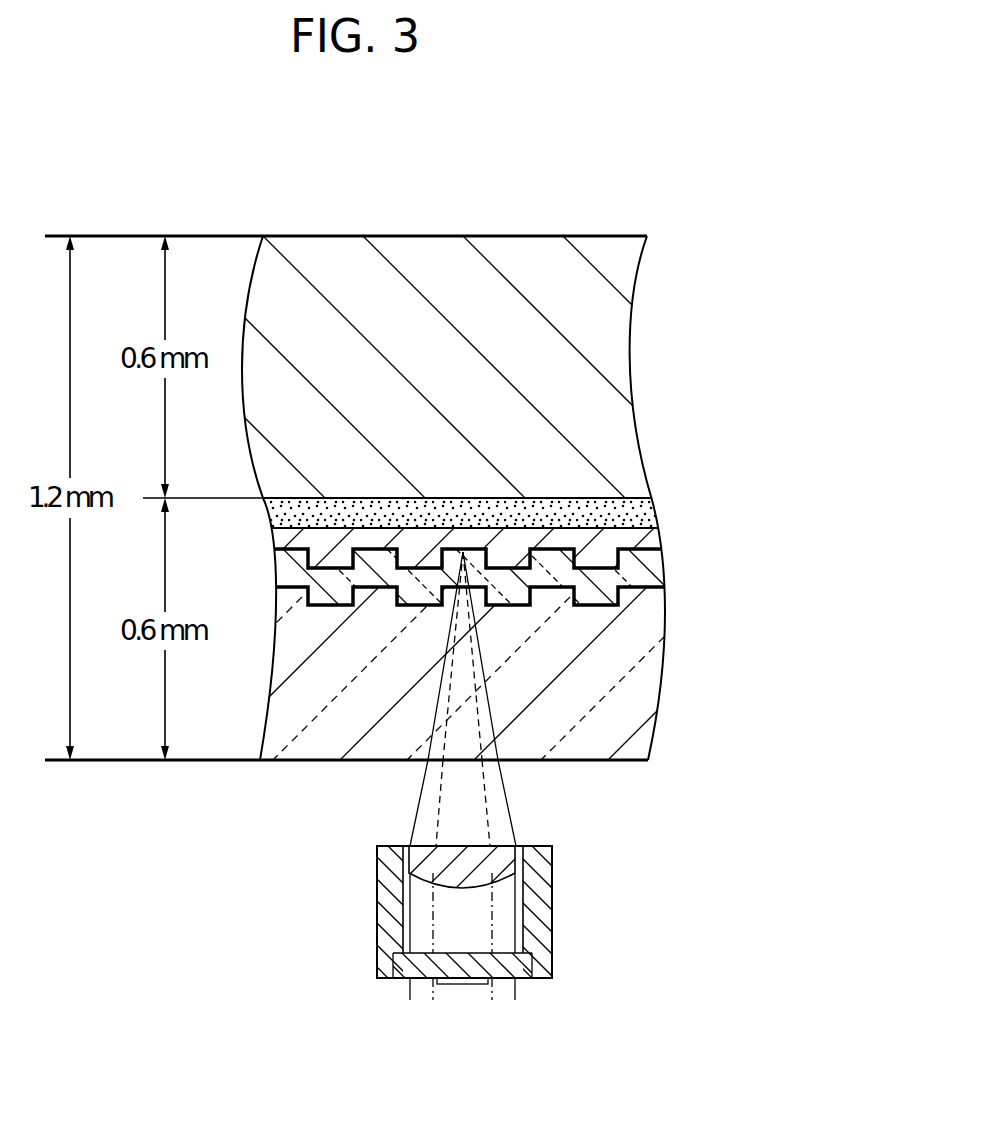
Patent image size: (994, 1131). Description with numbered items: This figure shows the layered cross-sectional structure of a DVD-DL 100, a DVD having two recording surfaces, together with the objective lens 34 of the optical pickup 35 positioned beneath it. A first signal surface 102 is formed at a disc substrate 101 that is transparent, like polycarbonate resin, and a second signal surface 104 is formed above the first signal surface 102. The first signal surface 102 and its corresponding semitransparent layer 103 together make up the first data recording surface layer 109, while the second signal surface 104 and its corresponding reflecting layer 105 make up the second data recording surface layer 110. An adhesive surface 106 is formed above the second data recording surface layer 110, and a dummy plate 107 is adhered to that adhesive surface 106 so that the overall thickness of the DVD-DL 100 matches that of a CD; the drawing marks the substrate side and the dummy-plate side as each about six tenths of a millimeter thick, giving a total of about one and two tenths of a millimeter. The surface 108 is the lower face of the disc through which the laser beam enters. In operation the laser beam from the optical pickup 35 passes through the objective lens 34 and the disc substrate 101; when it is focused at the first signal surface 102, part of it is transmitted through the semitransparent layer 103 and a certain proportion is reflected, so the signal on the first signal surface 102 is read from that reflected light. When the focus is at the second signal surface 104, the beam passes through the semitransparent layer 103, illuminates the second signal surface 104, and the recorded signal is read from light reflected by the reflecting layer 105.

The DVD-DL 100 is at (582, 226).
The disc substrate 101 is at (627, 697).
The first signal surface 102 is at (596, 605).
The semitransparent layer 103 is at (600, 590).
The second signal surface 104 is at (535, 552).
The reflecting layer 105 is at (507, 545).
The adhesive surface 106 is at (423, 507).
The dummy plate 107 is at (593, 335).
The light incident surface 108 is at (615, 762).
The first data recording surface layer 109 is at (770, 565).
The second data recording surface layer 110 is at (770, 478).
The objective lens 34 is at (500, 860).
The optical pickup 35 is at (537, 928).